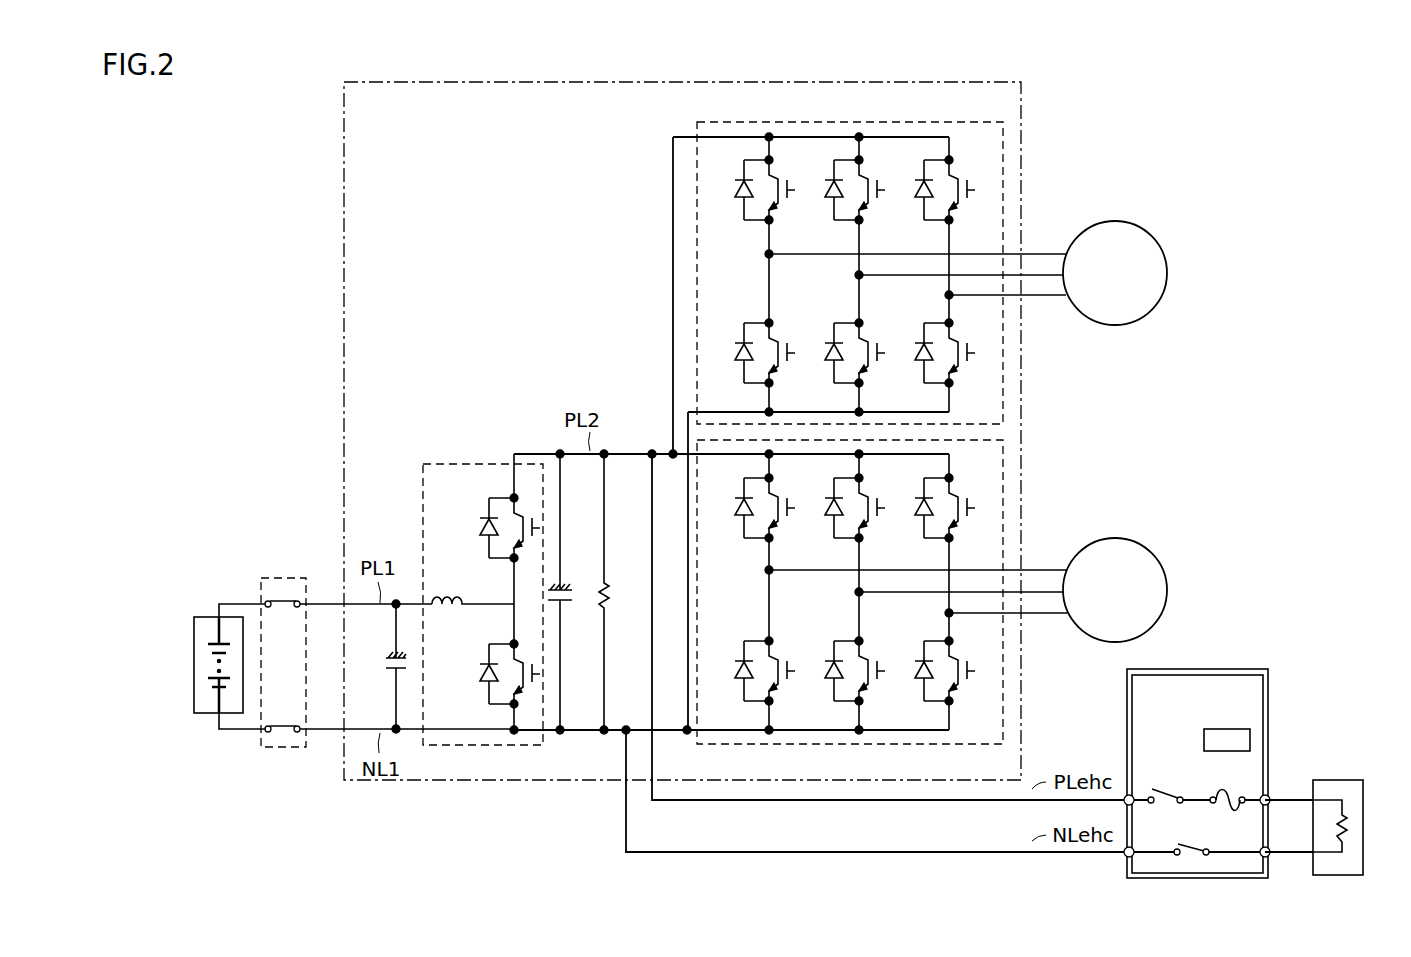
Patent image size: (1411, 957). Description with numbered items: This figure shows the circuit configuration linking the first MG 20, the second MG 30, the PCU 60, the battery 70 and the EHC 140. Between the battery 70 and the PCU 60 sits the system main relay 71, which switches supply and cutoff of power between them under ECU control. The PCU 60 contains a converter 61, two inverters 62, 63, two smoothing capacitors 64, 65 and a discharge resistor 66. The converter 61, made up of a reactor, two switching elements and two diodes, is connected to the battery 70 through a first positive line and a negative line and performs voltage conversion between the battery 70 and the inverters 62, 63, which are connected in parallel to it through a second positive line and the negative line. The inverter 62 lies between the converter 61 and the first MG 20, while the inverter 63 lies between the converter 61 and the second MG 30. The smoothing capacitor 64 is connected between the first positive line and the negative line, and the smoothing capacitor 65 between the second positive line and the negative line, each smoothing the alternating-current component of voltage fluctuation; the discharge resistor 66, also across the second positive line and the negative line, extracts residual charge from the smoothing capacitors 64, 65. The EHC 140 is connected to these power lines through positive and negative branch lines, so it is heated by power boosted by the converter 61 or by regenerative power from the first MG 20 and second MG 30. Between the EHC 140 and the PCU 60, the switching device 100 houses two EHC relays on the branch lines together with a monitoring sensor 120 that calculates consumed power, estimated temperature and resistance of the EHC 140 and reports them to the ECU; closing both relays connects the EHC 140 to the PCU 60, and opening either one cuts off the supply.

The first MG 20 is at (1139, 539).
The second MG 30 is at (1139, 223).
The PCU 60 is at (344, 237).
The converter 61 is at (488, 463).
The inverter 62 is at (765, 747).
The inverter 63 is at (935, 122).
The smoothing capacitor 64 is at (386, 664).
The smoothing capacitor 65 is at (572, 602).
The discharge resistor 66 is at (610, 600).
The battery 70 is at (194, 706).
The system main relay 71 is at (285, 578).
The switching device 100 is at (1242, 668).
The monitoring sensor 120 is at (1228, 728).
The EHC 140 is at (1348, 779).